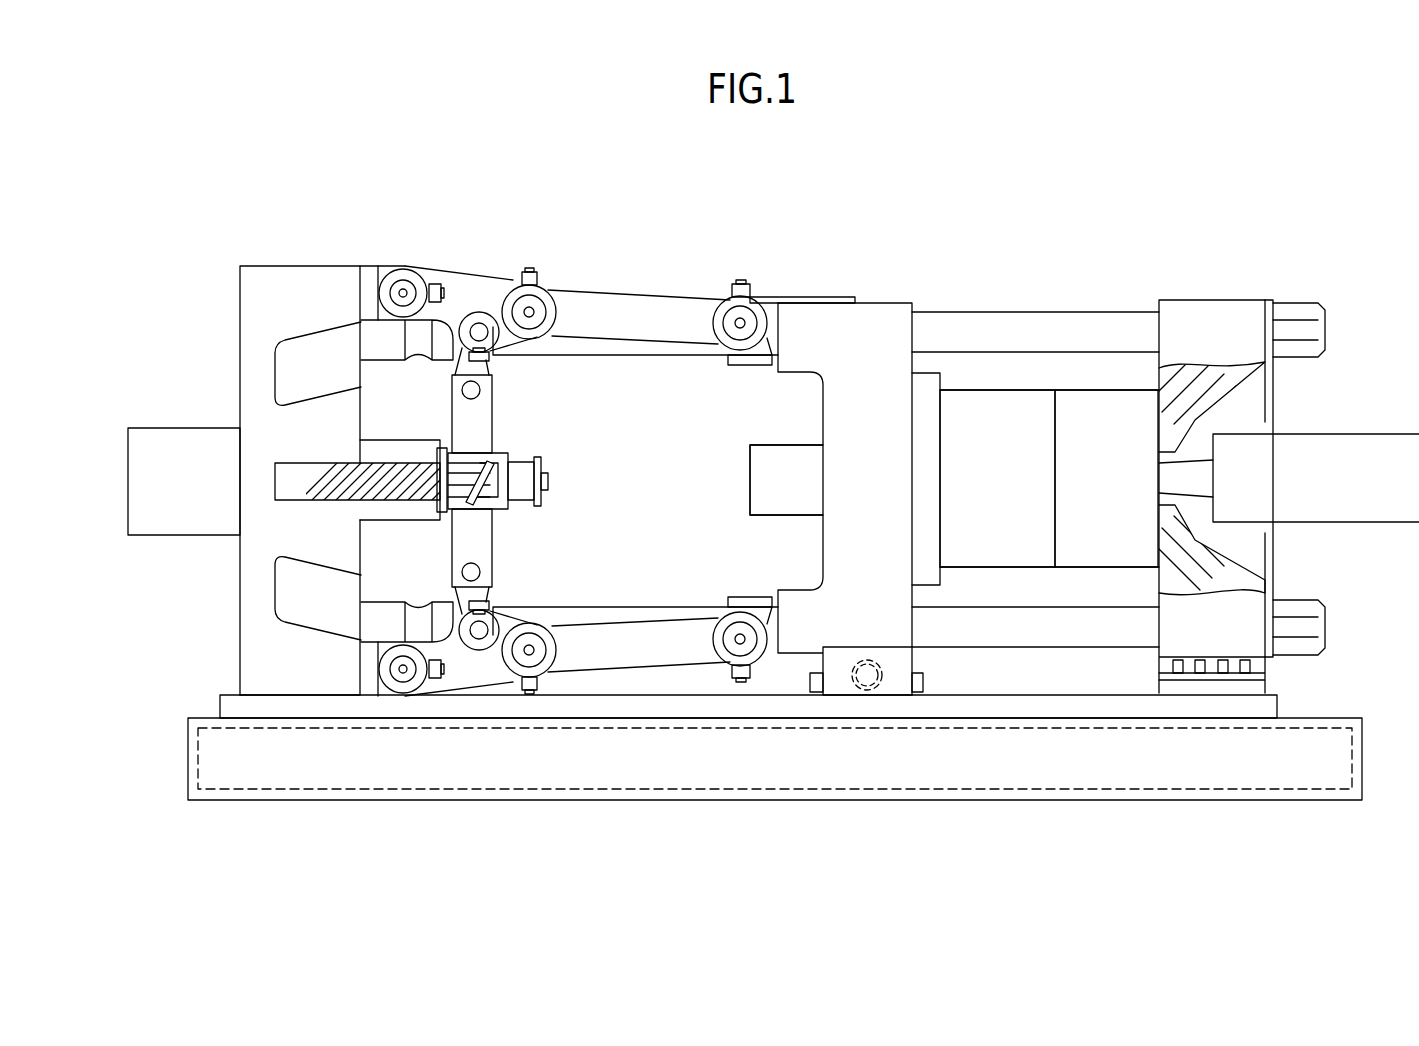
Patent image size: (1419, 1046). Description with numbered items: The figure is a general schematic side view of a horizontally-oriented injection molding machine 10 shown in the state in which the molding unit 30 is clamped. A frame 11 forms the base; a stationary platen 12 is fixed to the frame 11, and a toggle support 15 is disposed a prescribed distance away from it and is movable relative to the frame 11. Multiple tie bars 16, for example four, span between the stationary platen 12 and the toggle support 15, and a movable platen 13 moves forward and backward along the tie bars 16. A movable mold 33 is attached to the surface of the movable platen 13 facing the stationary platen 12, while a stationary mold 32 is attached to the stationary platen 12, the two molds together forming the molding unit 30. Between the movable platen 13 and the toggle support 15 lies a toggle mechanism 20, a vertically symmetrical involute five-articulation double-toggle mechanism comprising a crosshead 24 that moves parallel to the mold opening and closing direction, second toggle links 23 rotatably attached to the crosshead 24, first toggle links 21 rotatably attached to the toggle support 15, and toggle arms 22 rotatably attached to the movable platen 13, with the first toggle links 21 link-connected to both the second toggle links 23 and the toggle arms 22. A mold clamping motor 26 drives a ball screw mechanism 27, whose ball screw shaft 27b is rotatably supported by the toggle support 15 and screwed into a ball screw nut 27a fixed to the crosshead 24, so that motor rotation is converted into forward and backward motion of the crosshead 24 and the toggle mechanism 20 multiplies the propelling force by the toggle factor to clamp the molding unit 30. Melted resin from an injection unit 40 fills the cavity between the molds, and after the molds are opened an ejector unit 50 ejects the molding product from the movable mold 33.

The injection molding machine 10 is at (280, 123).
The frame 11 is at (190, 758).
The stationary platen 12 is at (1205, 318).
The movable platen 13 is at (826, 325).
The toggle support 15 is at (300, 283).
The tie bars 16 is at (946, 320).
The toggle mechanism 20 is at (597, 287).
The first toggle links 21 is at (462, 290).
The toggle arms 22 is at (665, 310).
The second toggle links 23 is at (490, 365).
The crosshead 24 is at (493, 432).
The mold clamping motor 26 is at (128, 478).
The ball screw mechanism 27 is at (447, 563).
The ball screw nut 27a is at (460, 507).
The ball screw shaft 27b is at (373, 492).
The molding unit 30 is at (1098, 224).
The stationary mold 32 is at (1100, 420).
The movable mold 33 is at (1022, 420).
The injection unit 40 is at (1370, 455).
The ejector unit 50 is at (750, 476).